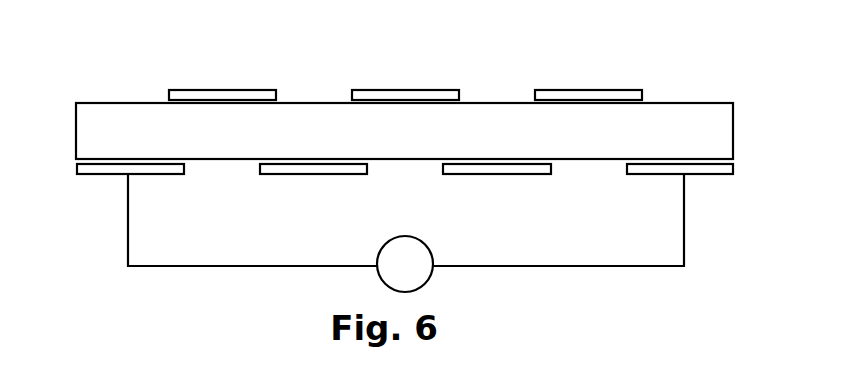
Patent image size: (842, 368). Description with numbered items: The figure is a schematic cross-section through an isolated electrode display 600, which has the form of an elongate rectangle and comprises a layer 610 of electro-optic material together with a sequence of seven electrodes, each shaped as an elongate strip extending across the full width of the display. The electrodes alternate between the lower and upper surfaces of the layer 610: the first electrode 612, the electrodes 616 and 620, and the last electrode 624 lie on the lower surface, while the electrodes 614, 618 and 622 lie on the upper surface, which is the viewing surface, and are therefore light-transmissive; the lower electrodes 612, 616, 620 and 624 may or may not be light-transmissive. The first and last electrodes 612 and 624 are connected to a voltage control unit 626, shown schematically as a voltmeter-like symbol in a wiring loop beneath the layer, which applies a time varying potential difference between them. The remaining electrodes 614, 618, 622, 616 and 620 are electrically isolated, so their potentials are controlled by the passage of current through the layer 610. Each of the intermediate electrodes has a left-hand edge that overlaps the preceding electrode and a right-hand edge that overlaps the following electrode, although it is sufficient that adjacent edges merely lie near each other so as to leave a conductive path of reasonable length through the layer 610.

The isolated electrode display 600 is at (478, 42).
The layer of electro-optic material 610 is at (385, 146).
The first electrode 612 is at (103, 169).
The electrode 614 is at (227, 91).
The electrode 616 is at (298, 169).
The electrode 618 is at (403, 93).
The electrode 620 is at (517, 169).
The electrode 622 is at (592, 95).
The last electrode 624 is at (693, 169).
The voltage control unit 626 is at (418, 260).